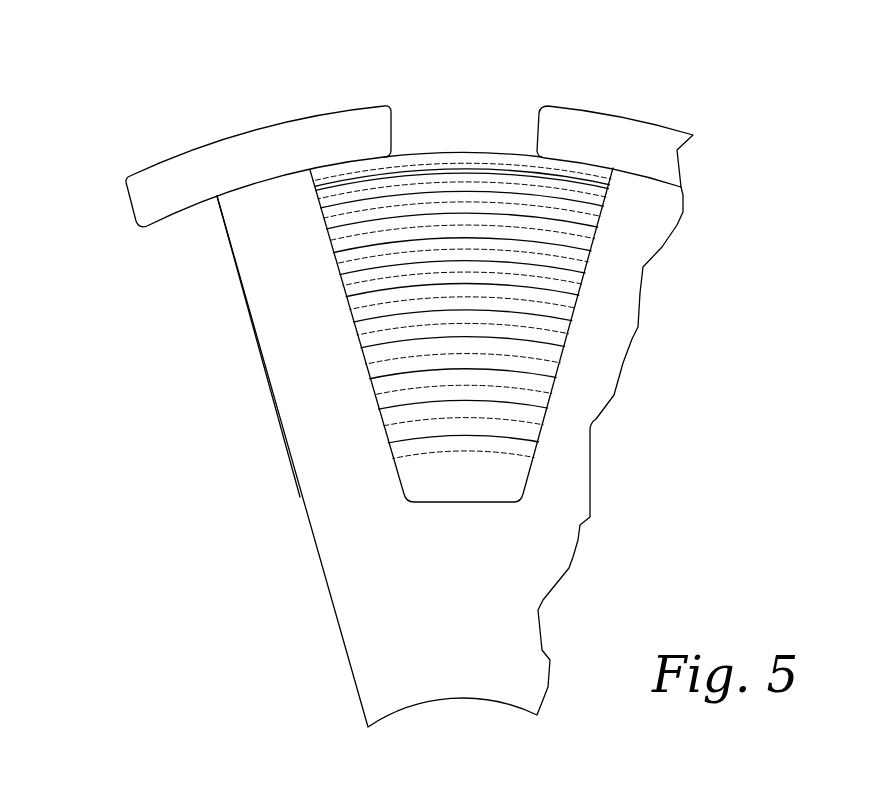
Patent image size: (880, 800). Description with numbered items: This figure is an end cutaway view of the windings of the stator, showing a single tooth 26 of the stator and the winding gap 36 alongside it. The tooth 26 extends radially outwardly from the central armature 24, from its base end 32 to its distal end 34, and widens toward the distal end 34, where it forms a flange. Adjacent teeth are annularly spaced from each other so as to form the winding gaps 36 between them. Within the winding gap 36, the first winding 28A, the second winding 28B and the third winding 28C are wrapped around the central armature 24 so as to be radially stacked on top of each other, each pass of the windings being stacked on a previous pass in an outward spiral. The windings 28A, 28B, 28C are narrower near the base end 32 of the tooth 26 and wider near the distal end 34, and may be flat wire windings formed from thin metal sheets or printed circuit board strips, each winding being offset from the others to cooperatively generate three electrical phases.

The central armature 24 is at (372, 683).
The teeth 26 is at (166, 358).
The first winding 28A is at (527, 497).
The second winding 28B is at (528, 470).
The third winding 28C is at (541, 449).
The base ends 32 is at (258, 517).
The distal ends 34 is at (95, 243).
The winding gaps 36 is at (470, 110).